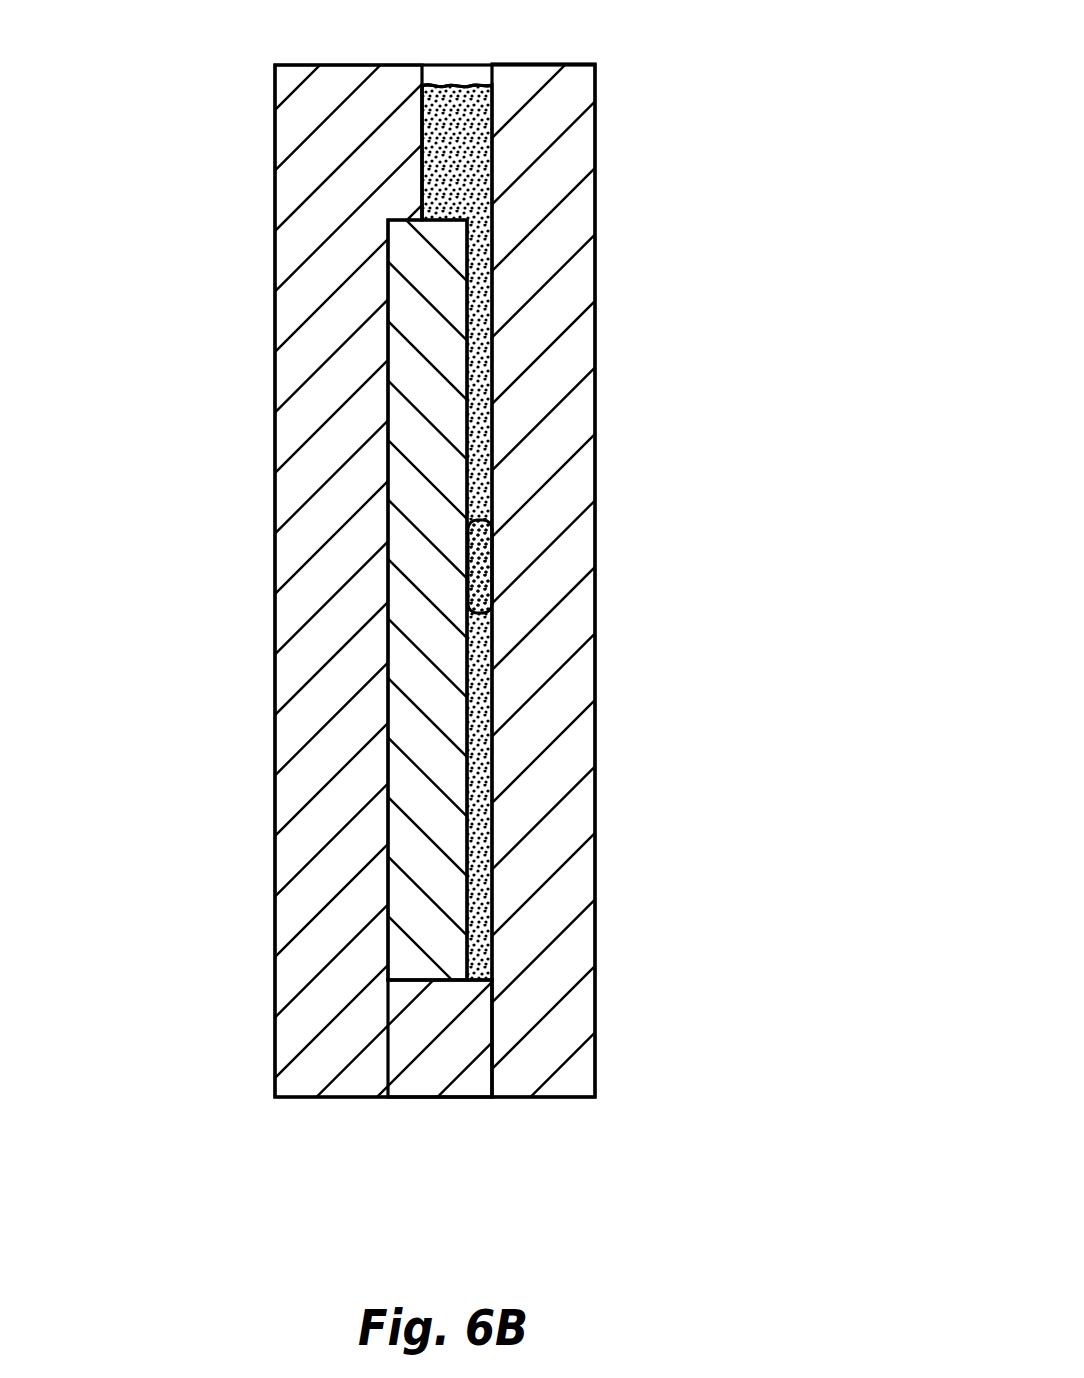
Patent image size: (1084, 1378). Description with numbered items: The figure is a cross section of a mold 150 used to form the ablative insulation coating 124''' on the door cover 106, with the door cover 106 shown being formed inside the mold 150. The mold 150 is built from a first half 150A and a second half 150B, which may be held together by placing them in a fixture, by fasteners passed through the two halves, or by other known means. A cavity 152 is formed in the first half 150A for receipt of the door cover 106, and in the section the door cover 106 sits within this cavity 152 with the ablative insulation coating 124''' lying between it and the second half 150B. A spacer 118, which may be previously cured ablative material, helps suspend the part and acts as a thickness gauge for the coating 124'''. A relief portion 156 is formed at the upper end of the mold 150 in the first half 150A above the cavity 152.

The mold 150 is at (782, 174).
The first half 150A is at (275, 262).
The second half 150B is at (596, 418).
The cavity 152 is at (388, 352).
The relief portion 156 is at (423, 147).
The spacers 118 is at (494, 566).
The ablative insulation coating 124''' is at (599, 532).
The door cover 106 is at (428, 1030).